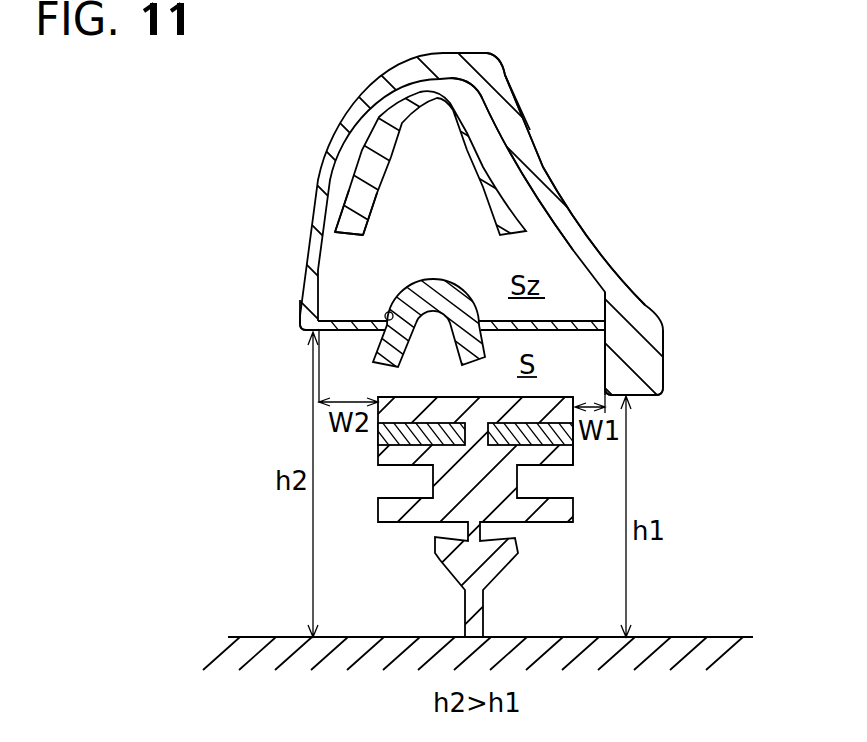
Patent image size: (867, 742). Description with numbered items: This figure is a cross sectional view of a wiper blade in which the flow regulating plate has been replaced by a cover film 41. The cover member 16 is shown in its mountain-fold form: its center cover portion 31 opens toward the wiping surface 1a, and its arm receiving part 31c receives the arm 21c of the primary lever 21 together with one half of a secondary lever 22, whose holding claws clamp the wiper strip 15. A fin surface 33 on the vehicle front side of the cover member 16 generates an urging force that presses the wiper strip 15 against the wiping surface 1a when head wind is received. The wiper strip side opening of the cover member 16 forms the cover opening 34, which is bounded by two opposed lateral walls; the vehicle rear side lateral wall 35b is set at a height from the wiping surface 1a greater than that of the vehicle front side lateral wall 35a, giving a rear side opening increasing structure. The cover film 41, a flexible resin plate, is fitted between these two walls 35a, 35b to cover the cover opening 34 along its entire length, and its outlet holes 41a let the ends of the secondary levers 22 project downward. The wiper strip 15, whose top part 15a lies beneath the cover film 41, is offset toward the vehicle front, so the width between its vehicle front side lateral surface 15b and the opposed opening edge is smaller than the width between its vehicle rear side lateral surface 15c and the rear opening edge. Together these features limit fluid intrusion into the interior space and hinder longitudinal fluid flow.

The cover member 16 is at (316, 125).
The primary lever 21 is at (433, 80).
The arm 21c is at (400, 120).
The center cover portion 31 is at (484, 54).
The arm receiving part 31c is at (498, 80).
The fin surface 33 is at (544, 158).
The cover opening 34 is at (608, 338).
The vehicle front side lateral wall 35a is at (642, 397).
The vehicle rear side lateral wall 35b is at (310, 333).
The cover film 41 is at (344, 333).
The outlet hole 41a is at (386, 313).
The secondary lever 22 is at (436, 284).
The wiper strip 15 is at (573, 462).
The terminal top surface 15a is at (480, 395).
The vehicle front side lateral surface 15b is at (576, 397).
The vehicle rear side lateral surface 15c is at (378, 432).
The wiping surface 1a is at (731, 637).